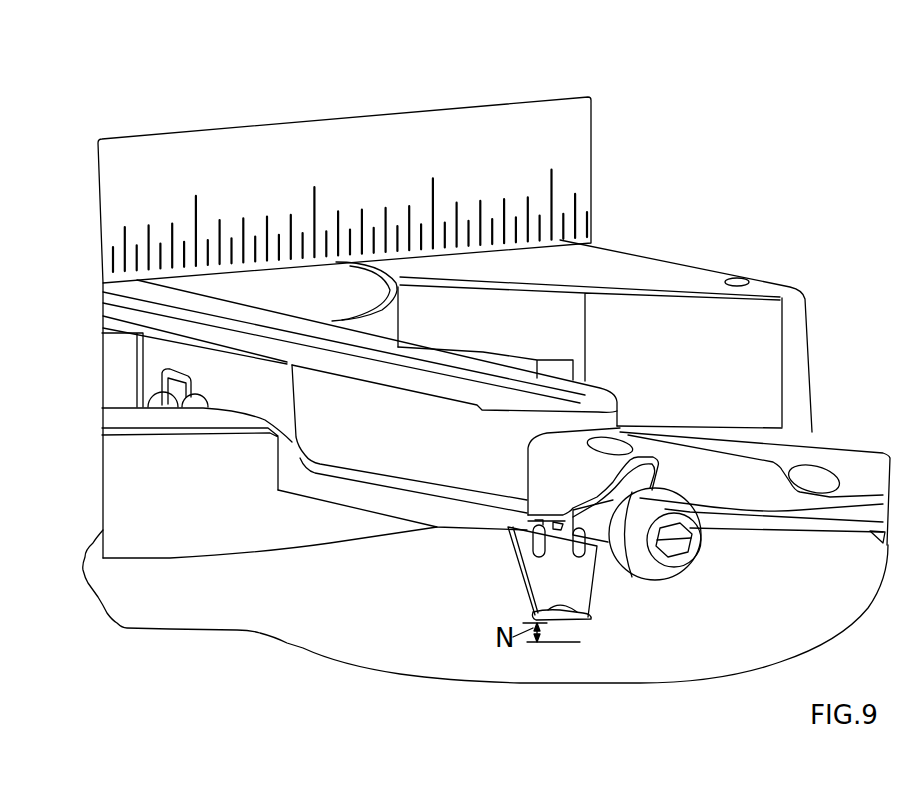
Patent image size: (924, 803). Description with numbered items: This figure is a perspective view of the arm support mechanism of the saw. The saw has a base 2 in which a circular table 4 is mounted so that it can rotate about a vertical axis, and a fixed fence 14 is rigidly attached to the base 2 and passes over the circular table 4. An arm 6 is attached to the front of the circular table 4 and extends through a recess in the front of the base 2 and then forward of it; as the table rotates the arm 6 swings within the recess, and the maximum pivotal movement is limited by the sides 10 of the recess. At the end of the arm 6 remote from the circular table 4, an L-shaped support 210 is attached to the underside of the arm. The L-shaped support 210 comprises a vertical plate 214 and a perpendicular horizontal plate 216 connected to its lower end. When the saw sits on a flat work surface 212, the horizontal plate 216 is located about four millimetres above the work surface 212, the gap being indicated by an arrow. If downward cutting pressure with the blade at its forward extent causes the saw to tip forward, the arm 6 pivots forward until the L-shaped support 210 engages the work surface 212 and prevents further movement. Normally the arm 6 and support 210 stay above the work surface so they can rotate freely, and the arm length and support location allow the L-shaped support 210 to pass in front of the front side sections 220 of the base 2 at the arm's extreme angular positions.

The base 2 is at (625, 260).
The circular table 4 is at (323, 294).
The arm 6 is at (430, 462).
The sides of the recess 10 is at (708, 372).
The fixed fence 14 is at (268, 155).
The L-shaped support 210 is at (503, 567).
The work surface 212 is at (348, 621).
The vertical plate 214 is at (567, 572).
The horizontal plate 216 is at (590, 616).
The front side sections of the base 220 is at (816, 510).